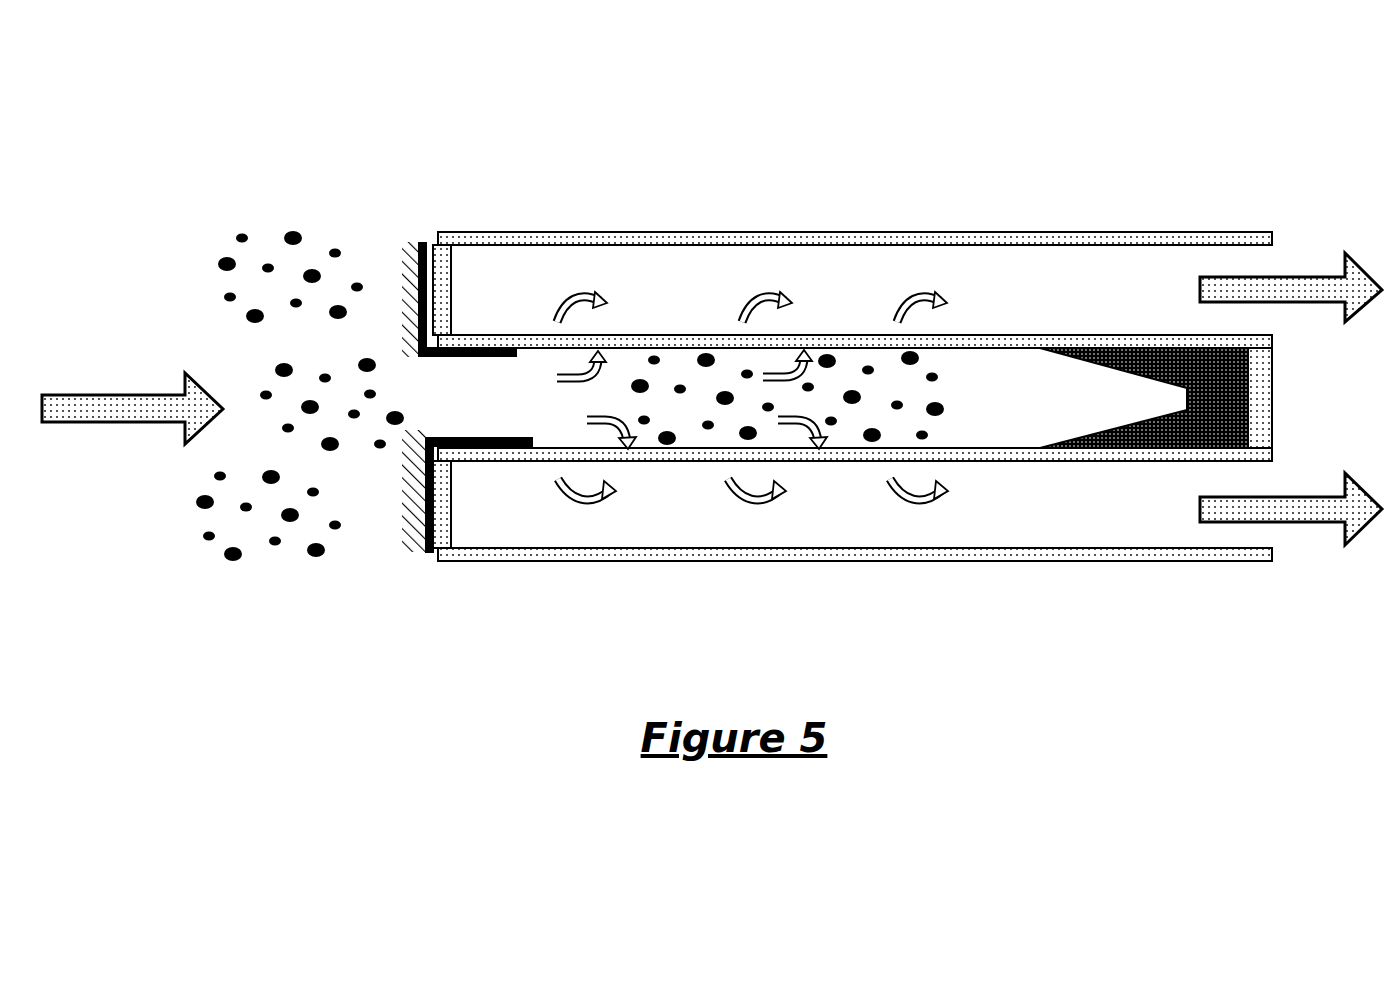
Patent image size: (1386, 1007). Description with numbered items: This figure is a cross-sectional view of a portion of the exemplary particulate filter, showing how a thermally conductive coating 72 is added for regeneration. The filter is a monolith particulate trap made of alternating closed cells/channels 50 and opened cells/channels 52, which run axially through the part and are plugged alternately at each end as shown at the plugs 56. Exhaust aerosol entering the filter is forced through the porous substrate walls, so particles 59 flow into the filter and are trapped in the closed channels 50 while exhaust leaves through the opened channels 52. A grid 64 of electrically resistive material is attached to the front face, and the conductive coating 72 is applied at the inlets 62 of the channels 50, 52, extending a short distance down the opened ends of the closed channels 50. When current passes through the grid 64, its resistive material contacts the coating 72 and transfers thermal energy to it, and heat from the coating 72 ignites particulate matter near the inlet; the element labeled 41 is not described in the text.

The tube walls 41 is at (695, 340).
The closed cells/channels 50 is at (1070, 382).
The opened cells/channels 52 is at (1028, 282).
The plugs 56 is at (440, 238).
The particles 59 is at (1230, 385).
The inlets 62 is at (392, 385).
The grid 64 is at (413, 540).
The thermally conductive coating 72 is at (418, 240).